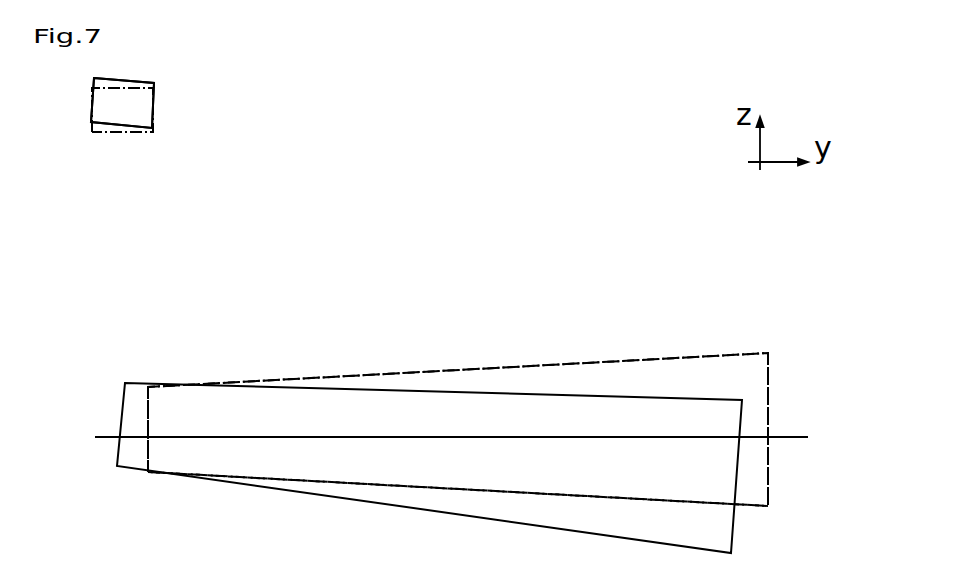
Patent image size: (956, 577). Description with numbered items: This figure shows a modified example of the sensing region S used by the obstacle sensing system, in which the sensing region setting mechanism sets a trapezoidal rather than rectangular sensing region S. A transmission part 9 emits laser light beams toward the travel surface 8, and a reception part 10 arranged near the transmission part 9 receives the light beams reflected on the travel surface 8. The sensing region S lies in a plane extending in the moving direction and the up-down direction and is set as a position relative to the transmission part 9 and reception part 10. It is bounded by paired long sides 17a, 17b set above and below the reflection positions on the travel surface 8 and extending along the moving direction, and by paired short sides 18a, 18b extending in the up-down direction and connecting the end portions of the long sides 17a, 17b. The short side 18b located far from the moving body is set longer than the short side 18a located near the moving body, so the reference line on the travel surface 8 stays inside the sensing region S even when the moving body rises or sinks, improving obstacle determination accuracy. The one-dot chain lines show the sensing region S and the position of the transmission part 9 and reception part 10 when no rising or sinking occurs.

The transmission part 9 is at (138, 130).
The reception part 10 is at (122, 103).
The travel surface 8 is at (793, 436).
The sensing region S is at (770, 350).
The long side 17a is at (702, 356).
The long side 17b is at (692, 500).
The short side 18a is at (148, 408).
The short side 18b is at (768, 488).